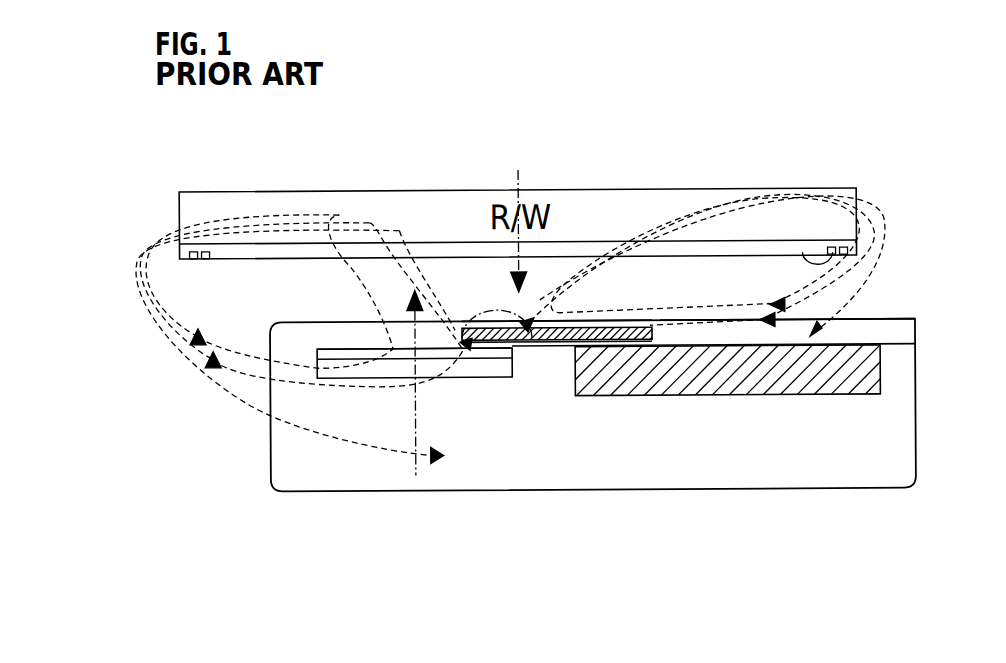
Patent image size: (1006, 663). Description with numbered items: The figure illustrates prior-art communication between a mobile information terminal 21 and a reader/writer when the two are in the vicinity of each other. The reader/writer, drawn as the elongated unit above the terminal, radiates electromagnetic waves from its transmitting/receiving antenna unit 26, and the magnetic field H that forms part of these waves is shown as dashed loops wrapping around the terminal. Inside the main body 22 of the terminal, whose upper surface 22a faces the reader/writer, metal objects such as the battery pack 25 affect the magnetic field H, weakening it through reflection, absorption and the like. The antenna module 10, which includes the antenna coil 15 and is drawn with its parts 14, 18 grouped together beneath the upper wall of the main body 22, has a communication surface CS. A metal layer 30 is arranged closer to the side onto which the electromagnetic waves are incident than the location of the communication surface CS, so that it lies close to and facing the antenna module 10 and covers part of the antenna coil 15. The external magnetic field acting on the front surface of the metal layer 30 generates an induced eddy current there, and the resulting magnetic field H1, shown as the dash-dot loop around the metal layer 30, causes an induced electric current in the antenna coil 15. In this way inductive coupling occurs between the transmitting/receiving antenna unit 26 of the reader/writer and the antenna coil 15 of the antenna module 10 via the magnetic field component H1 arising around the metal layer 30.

The antenna module 10 is at (527, 532).
The IC chip 14 is at (497, 342).
The tag antenna 18 is at (464, 347).
The antenna coil 15 is at (323, 348).
The communication surface CS is at (395, 348).
The metal layer 30 is at (497, 320).
The transmitting/receiving antenna unit 26 is at (803, 254).
The main body 22 is at (782, 490).
The top surface of housing 22a is at (893, 319).
The battery pack 25 is at (872, 366).
The mobile information terminal 21 is at (262, 484).
The magnetic field H is at (872, 232).
The magnetic field H1 is at (532, 338).